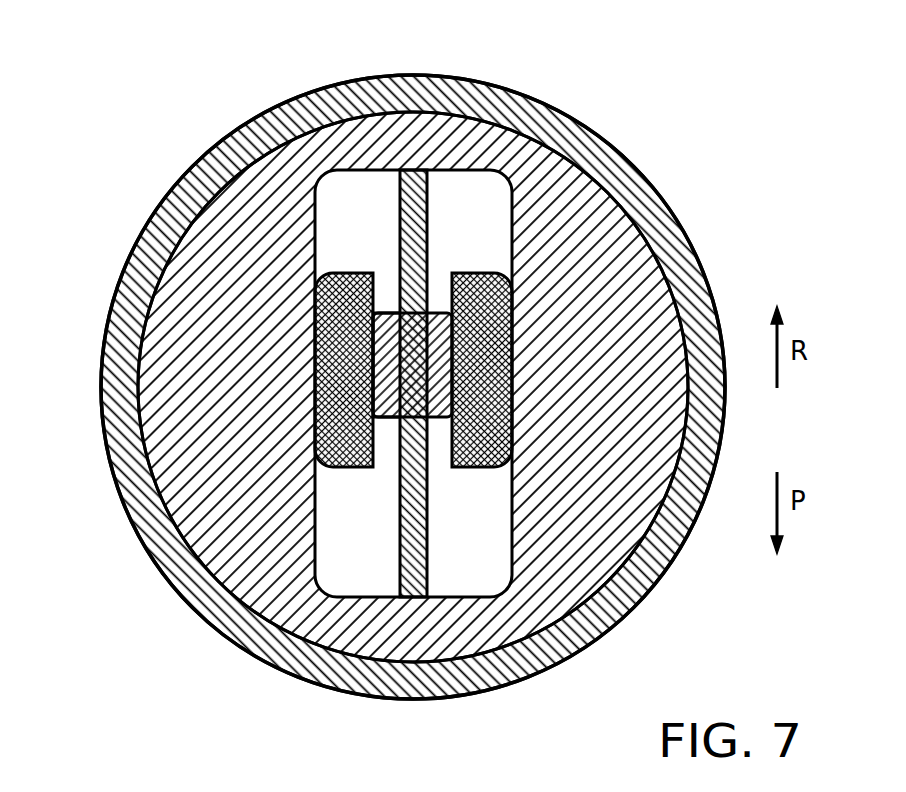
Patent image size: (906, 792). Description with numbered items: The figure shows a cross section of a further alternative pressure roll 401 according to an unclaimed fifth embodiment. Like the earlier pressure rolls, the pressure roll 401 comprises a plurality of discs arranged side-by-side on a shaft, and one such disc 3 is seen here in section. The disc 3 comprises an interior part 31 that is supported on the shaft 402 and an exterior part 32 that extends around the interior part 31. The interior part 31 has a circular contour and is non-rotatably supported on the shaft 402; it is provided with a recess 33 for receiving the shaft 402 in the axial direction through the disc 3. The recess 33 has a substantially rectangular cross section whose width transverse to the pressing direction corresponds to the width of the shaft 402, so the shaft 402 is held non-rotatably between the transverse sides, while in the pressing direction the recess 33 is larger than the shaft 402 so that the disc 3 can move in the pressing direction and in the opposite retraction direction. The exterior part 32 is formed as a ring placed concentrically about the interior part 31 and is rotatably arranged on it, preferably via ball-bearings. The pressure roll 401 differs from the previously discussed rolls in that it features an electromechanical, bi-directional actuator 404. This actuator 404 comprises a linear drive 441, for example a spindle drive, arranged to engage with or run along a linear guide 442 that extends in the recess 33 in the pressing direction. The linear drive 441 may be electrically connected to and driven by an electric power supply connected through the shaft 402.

The pressure roll 401 is at (112, 136).
The disc 3 is at (635, 186).
The exterior part 32 is at (148, 530).
The interior part 31 is at (298, 617).
The recess 33 is at (340, 590).
The shaft 402 is at (340, 380).
The actuator 404 is at (390, 417).
The linear drive 441 is at (388, 313).
The linear guide 442 is at (427, 233).